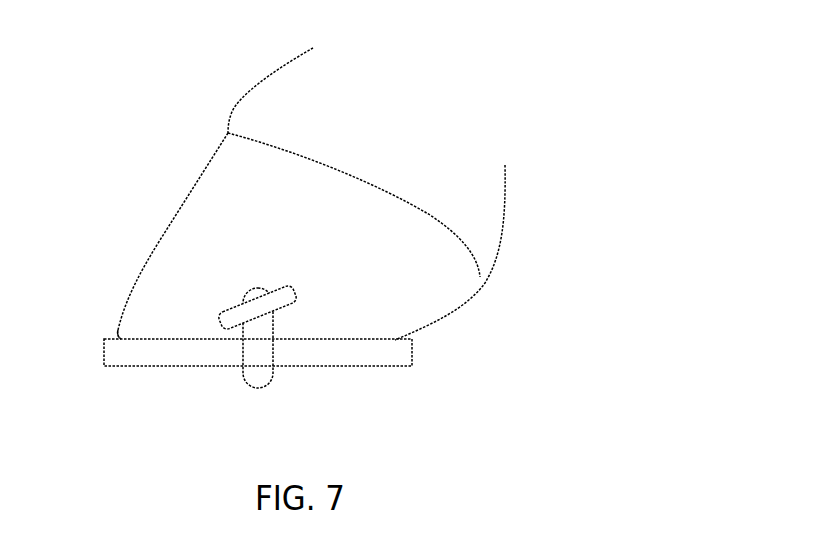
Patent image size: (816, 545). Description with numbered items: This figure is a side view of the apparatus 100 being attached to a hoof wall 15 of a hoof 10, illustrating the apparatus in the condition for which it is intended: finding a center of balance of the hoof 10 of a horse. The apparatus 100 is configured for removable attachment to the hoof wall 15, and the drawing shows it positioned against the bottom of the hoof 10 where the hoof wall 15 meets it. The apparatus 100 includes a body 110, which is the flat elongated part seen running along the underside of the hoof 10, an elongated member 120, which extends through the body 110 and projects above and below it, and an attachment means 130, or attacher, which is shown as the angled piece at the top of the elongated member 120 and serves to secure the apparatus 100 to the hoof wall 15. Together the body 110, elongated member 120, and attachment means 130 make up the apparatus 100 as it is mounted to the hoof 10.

The apparatus 100 is at (291, 228).
The hoof 10 is at (437, 283).
The hoof wall 15 is at (123, 337).
The body 110 is at (355, 365).
The elongated member 120 is at (253, 387).
The attachment means 130 is at (240, 315).